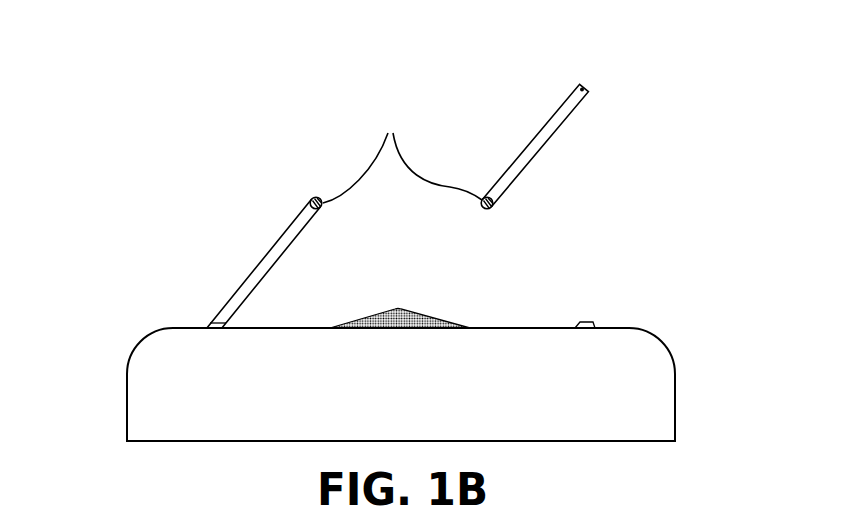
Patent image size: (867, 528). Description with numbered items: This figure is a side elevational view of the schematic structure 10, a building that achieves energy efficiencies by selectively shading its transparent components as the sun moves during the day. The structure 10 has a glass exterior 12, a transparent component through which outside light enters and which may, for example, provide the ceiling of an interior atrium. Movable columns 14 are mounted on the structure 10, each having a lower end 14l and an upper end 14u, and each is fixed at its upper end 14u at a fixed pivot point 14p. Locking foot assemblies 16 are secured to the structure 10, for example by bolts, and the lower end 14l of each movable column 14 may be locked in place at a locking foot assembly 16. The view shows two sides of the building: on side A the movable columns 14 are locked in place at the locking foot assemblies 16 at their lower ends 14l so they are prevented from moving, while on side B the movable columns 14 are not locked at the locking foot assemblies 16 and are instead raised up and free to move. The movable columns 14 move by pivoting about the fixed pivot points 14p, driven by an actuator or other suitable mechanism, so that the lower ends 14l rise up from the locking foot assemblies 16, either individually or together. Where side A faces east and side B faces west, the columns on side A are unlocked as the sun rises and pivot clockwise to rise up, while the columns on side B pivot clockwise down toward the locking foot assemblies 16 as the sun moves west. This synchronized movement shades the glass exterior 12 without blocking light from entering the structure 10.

The structure 10 is at (232, 183).
The glass exterior 12 is at (420, 313).
The movable column 14 is at (257, 263).
The lower end 14l is at (220, 312).
The upper end 14u is at (303, 207).
The fixed pivot point 14p is at (402, 154).
The locking foot assembly 16 is at (210, 325).
The side A is at (132, 272).
The side B is at (618, 258).